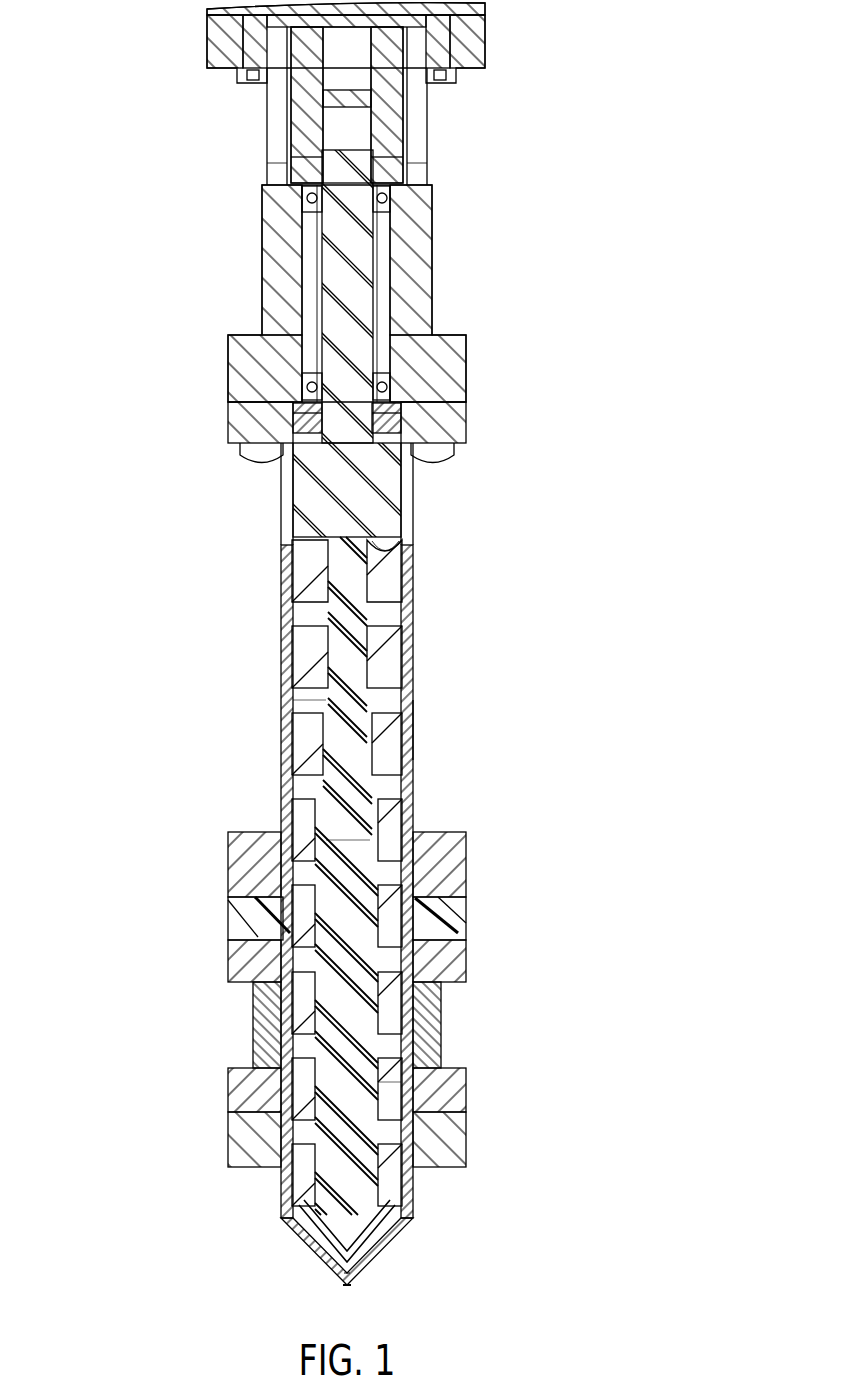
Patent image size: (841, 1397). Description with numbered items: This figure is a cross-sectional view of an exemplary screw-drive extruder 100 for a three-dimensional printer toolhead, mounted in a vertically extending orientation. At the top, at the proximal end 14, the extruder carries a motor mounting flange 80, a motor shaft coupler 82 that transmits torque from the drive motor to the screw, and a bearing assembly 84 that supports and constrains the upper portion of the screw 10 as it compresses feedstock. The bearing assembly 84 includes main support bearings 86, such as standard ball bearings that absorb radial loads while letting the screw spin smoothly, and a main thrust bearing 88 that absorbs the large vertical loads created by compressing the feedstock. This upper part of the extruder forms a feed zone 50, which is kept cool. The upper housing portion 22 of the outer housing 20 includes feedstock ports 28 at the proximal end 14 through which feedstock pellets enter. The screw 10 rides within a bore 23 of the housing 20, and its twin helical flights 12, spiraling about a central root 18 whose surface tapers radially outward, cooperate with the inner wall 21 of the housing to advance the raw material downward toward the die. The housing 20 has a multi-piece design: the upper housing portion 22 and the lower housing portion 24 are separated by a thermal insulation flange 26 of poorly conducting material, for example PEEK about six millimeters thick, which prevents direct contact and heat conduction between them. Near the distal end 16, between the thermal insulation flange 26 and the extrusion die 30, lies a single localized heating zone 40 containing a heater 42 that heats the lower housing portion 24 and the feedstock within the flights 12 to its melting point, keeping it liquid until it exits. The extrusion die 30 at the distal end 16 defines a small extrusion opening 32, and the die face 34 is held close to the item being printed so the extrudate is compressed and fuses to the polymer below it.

The extruder 100 is at (455, 316).
The proximal end 14 is at (215, 463).
The motor mounting flange 80 is at (485, 22).
The motor shaft coupler 82 is at (365, 118).
The bearing assembly 84 is at (282, 277).
The main support bearings 86 is at (384, 380).
The main thrust bearing 88 is at (461, 410).
The feed zone 50 is at (53, 443).
The feedstock ports 28 is at (287, 479).
The outer housing 20 is at (406, 584).
The upper housing portion 22 is at (408, 743).
The screw 10 is at (348, 628).
The flights 12 is at (315, 592).
The bore 23 is at (373, 553).
The inner wall 21 is at (300, 702).
The root 18 is at (352, 840).
The heating zone 40 is at (53, 938).
The thermal insulation flange 26 is at (461, 916).
The heater 42 is at (435, 1022).
The lower housing portion 24 is at (398, 1082).
The extrusion die 30 is at (457, 1157).
The distal end 16 is at (262, 1244).
The die face 34 is at (345, 1288).
The extrusion opening 32 is at (356, 1290).